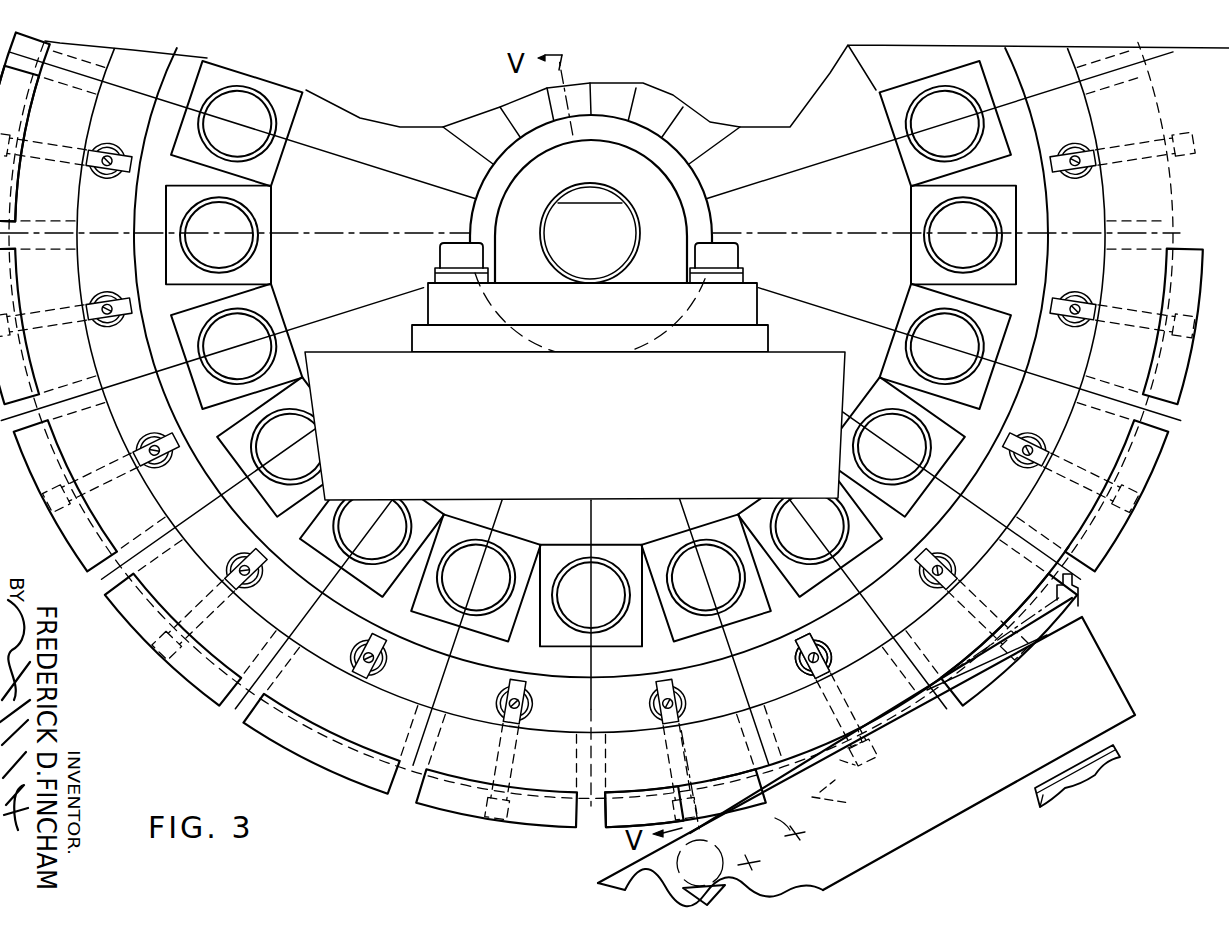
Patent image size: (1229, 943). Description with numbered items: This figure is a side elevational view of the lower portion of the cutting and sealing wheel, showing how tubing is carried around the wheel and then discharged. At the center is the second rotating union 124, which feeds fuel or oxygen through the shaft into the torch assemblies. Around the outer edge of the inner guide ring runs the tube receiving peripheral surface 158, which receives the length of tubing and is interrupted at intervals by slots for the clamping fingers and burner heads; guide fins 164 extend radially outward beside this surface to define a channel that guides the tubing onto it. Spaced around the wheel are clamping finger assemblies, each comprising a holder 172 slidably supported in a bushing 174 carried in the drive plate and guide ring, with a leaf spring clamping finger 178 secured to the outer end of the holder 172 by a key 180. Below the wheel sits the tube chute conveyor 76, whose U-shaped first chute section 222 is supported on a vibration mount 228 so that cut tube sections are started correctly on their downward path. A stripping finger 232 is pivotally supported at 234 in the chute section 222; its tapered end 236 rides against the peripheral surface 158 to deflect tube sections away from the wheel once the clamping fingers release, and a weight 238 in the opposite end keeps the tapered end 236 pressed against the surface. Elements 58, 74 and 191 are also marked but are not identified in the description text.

The clip 58 is at (1078, 594).
The rim segment 74 is at (228, 720).
The tube chute conveyor 76 is at (595, 855).
The second rotating union 124 is at (570, 193).
The tube receiving peripheral surface 158 is at (1168, 376).
The guide fins 164 is at (1073, 606).
The holder 172 is at (800, 662).
The bushing 174 is at (816, 651).
The leaf spring clamping finger 178 is at (850, 706).
The key 180 is at (806, 686).
The pin 191 is at (775, 820).
The first chute section 222 is at (1120, 658).
The vibration mount 228 is at (1116, 745).
The stripping finger 232 is at (852, 803).
The pivot support 234 is at (808, 835).
The tapered end 236 is at (858, 768).
The weight 238 is at (760, 868).